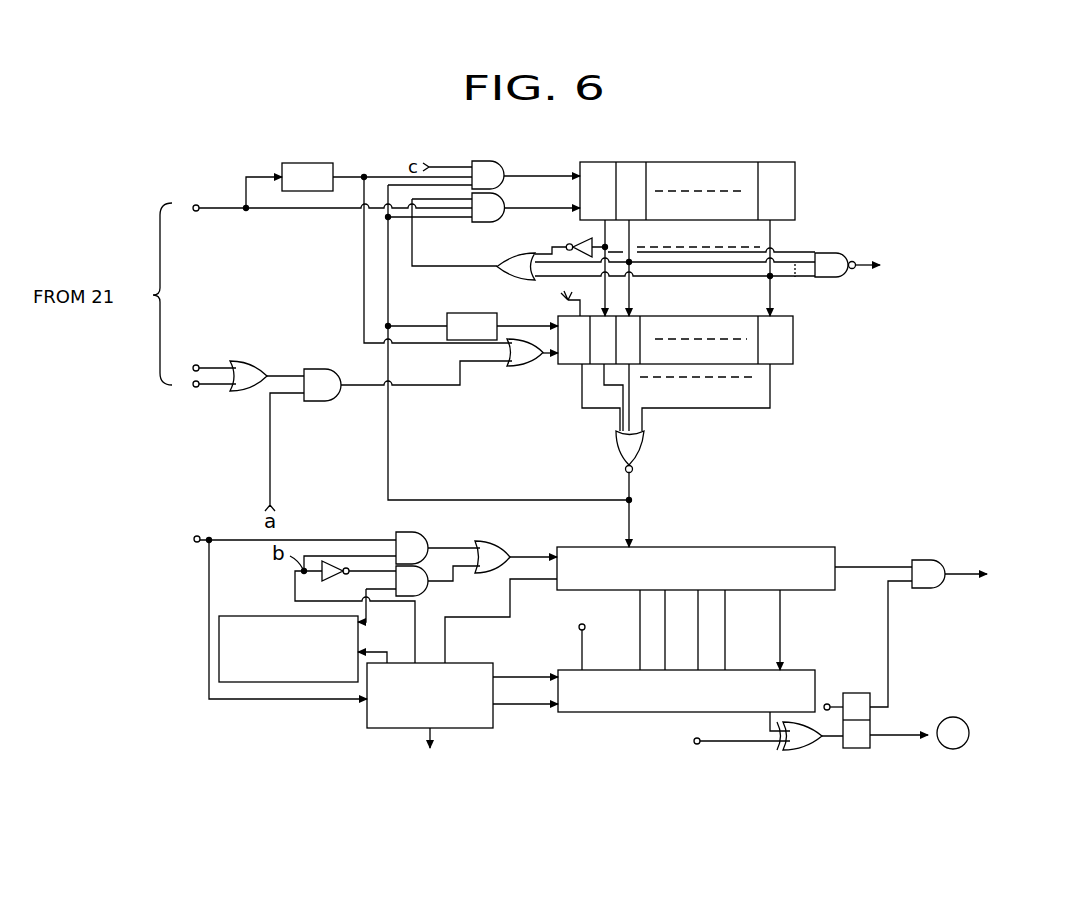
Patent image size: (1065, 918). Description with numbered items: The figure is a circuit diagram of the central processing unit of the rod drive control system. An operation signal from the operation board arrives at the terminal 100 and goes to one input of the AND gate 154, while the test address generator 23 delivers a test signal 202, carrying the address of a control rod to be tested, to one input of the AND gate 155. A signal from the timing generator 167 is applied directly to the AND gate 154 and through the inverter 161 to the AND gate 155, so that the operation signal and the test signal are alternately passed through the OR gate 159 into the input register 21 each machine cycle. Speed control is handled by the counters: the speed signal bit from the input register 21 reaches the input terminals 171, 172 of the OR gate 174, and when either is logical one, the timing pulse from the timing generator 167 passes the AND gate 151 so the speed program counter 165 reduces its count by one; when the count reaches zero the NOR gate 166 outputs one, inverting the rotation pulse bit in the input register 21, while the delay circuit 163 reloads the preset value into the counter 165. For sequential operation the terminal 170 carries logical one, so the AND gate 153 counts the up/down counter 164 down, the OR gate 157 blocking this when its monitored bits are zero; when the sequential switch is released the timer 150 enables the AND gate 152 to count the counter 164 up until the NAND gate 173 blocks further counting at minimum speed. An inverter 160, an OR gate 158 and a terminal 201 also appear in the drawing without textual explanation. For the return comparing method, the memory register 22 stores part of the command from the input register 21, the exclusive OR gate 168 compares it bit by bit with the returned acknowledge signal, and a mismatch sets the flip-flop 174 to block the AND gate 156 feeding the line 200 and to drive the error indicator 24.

The timer 150 is at (311, 163).
The AND gate 152 is at (489, 161).
The AND gate 153 is at (482, 223).
The up/down counter 164 is at (740, 162).
The terminal 170 is at (196, 205).
The inverter 160 is at (573, 245).
The NAND gate 173 is at (835, 253).
The OR gate 157 is at (514, 281).
The delay circuit 163 is at (472, 313).
The OR gate 158 is at (527, 367).
The speed program counter 165 is at (793, 347).
The NOR gate 166 is at (618, 454).
The input terminal 171 is at (197, 365).
The input terminal 172 is at (195, 388).
The OR gate / flip-flop 174 is at (253, 361).
The AND gate 151 is at (324, 369).
The terminal 100 is at (197, 535).
The inverter 161 is at (332, 560).
The AND gate 154 is at (415, 531).
The AND gate 155 is at (436, 594).
The test signal 202 is at (372, 606).
The OR gate 159 is at (490, 541).
The input register 21 is at (778, 547).
The AND gate 156 is at (933, 560).
The line 200 is at (985, 573).
The test address generator 23 is at (245, 616).
The timing generator 167 is at (380, 729).
The memory register 22 is at (630, 712).
The exclusive OR gate 168 is at (805, 751).
The input terminal 201 is at (698, 745).
The error indicator 24 is at (966, 724).